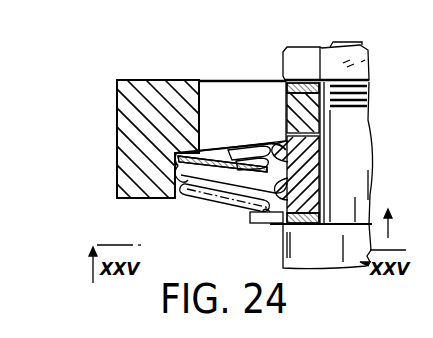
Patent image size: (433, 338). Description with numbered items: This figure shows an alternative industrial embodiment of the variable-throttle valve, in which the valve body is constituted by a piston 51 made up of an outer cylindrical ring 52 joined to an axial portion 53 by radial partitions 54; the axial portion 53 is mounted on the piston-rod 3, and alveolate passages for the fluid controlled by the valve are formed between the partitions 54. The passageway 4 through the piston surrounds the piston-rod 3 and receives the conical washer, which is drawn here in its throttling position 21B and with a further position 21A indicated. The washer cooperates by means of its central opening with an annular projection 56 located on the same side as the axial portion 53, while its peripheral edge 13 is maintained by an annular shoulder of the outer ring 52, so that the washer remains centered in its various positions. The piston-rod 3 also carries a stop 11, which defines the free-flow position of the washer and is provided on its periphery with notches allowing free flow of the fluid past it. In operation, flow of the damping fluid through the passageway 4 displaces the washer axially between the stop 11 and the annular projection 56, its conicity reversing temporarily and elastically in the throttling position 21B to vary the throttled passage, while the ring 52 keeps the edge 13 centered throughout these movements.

The piston-rod 3 is at (325, 258).
The passageway 4 is at (423, 45).
The stop 11 is at (272, 219).
The peripheral edge 13 is at (190, 189).
The contact rod 21A is at (215, 202).
The throttling position 21B is at (233, 147).
The piston 51 is at (110, 105).
The outer cylindrical ring 52 is at (133, 174).
The axial portion 53 is at (323, 110).
The radial partitions 54 is at (220, 93).
The annular projection 56 is at (305, 181).